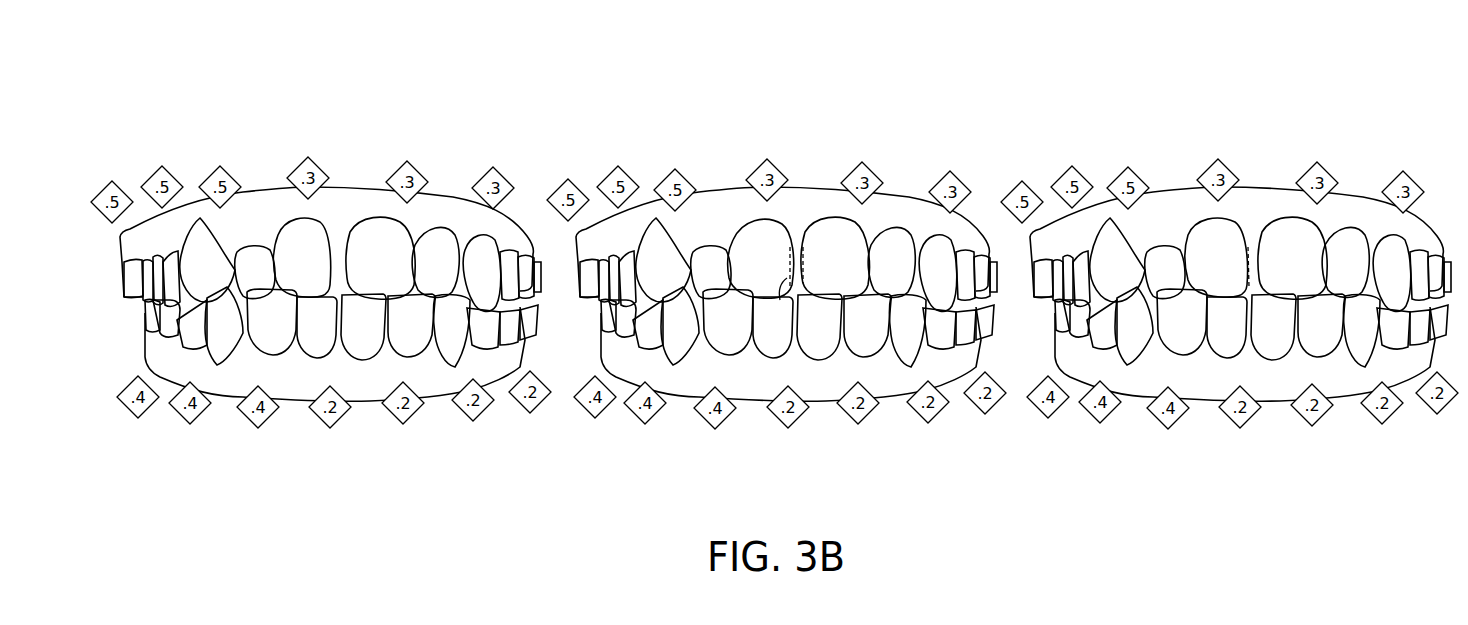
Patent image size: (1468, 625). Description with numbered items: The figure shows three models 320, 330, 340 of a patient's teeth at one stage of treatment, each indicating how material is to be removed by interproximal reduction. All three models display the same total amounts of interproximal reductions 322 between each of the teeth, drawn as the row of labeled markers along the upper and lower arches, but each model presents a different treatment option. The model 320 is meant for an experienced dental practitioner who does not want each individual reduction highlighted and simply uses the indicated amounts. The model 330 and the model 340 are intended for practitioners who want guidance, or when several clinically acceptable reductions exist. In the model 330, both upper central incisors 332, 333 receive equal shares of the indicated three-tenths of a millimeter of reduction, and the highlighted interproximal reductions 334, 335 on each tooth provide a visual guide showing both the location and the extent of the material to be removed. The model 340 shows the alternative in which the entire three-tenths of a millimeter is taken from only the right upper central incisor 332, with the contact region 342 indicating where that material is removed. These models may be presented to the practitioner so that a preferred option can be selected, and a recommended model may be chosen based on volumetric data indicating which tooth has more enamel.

The model 320 is at (470, 78).
The model 330 is at (926, 76).
The model 340 is at (1381, 96).
The interproximal reductions 322 is at (232, 177).
The upper central incisor 332 is at (758, 242).
The upper central incisor 333 is at (832, 237).
The interproximal reduction 335 is at (791, 249).
The interproximal reduction 334 is at (780, 300).
The contact line between teeth after adjustment 342 is at (1258, 305).